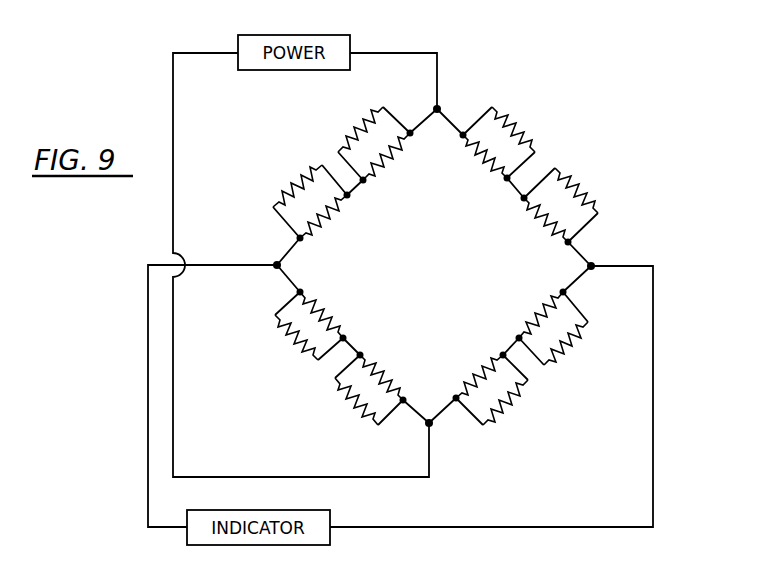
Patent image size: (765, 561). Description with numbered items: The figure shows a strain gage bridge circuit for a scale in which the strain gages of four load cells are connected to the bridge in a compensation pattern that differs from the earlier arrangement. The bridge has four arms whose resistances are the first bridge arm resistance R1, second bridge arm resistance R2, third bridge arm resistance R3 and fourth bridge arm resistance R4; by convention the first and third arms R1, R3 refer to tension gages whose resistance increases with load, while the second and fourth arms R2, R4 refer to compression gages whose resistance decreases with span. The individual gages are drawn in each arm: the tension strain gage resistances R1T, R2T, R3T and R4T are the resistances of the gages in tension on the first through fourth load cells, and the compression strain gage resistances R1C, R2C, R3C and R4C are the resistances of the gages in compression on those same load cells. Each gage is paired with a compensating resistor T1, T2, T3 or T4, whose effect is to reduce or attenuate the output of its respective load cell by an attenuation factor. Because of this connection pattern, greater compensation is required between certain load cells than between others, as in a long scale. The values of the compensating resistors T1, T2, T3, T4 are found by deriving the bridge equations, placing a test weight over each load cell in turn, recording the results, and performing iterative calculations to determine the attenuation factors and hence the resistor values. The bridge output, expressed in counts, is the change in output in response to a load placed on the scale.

The first bridge arm resistance R1 is at (367, 81).
The second bridge arm resistance R2 is at (506, 77).
The third bridge arm resistance R3 is at (618, 326).
The fourth bridge arm resistance R4 is at (367, 449).
The compensating resistor T1 is at (437, 129).
The compensating resistor T2 is at (437, 189).
The compensating resistor T3 is at (430, 340).
The compensating resistor T4 is at (431, 402).
The tension strain gage resistance R1T is at (393, 157).
The compression strain gage resistance R1C is at (477, 158).
The tension strain gage resistance R2T is at (331, 218).
The compression strain gage resistance R2C is at (534, 220).
The tension strain gage resistance R3T is at (530, 313).
The compression strain gage resistance R3C is at (331, 315).
The tension strain gage resistance R4T is at (470, 372).
The compression strain gage resistance R4C is at (388, 374).